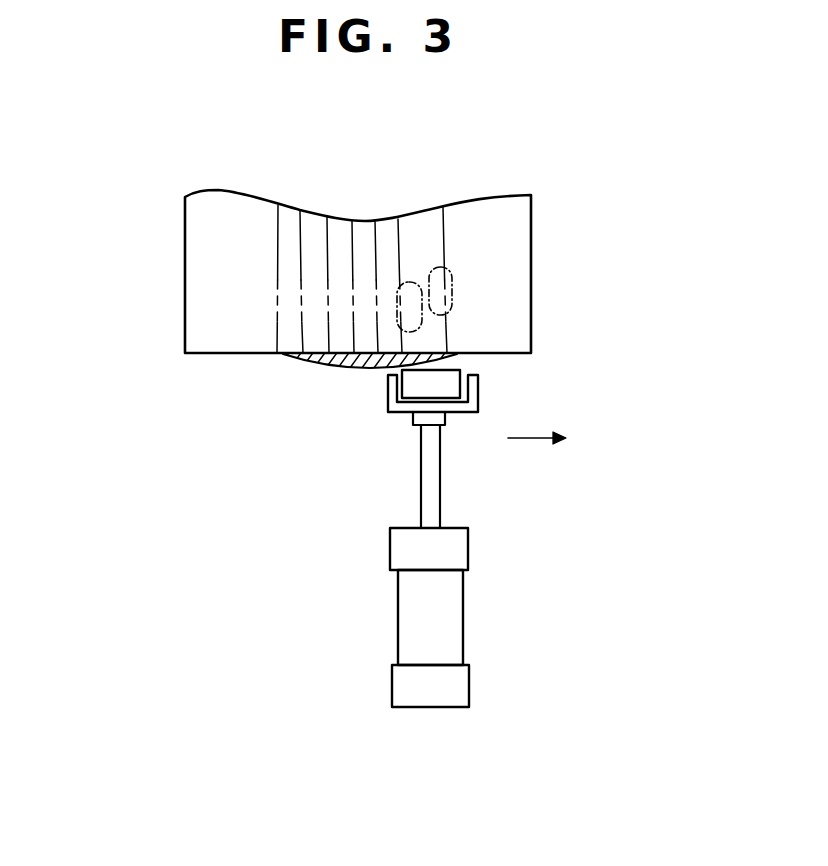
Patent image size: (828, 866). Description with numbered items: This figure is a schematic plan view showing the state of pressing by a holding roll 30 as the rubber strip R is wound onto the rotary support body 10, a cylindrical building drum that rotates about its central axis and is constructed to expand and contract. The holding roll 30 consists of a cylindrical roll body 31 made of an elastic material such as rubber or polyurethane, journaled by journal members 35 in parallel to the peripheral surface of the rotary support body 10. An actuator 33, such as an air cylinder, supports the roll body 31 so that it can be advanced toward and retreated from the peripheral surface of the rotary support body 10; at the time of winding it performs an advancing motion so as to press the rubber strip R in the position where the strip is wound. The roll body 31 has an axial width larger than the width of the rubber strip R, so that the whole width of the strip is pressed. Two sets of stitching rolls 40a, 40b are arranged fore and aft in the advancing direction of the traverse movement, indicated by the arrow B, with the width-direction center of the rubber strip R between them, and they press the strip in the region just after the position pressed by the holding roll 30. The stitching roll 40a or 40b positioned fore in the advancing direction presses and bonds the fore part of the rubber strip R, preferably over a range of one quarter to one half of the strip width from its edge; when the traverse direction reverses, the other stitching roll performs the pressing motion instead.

The rotary support body 10 is at (512, 296).
The stitching roll 40a is at (450, 269).
The stitching roll 40b is at (405, 321).
The rubber strip R is at (297, 361).
The holding roll 30 is at (452, 392).
The roll body 31 is at (460, 372).
The journal member 35 is at (388, 408).
The actuator 33 is at (417, 598).
The arrow B is at (550, 439).